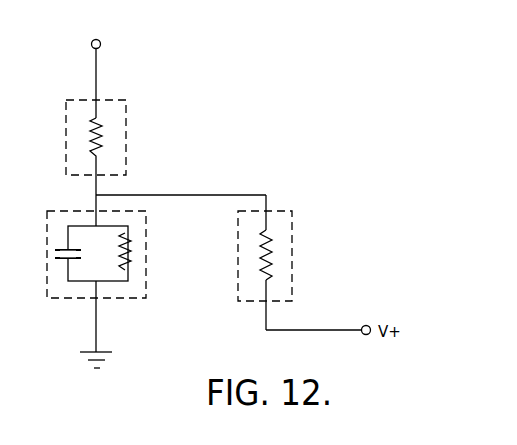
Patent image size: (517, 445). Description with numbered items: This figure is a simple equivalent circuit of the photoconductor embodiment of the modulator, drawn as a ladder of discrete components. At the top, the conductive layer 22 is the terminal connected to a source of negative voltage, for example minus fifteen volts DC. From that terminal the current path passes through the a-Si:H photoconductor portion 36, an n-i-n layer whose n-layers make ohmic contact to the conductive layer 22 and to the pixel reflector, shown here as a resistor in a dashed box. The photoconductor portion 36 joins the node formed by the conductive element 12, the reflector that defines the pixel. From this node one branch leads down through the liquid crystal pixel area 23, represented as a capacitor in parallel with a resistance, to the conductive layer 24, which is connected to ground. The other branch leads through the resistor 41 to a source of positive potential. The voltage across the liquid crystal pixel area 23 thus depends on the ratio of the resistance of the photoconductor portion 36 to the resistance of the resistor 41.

The conductive layer 22 is at (91, 47).
The photoconductor portion 36 is at (126, 119).
The conductive element 12 is at (96, 191).
The liquid crystal pixel area 23 is at (146, 293).
The conductive layer 24 is at (96, 322).
The resistor layer 41 is at (268, 272).